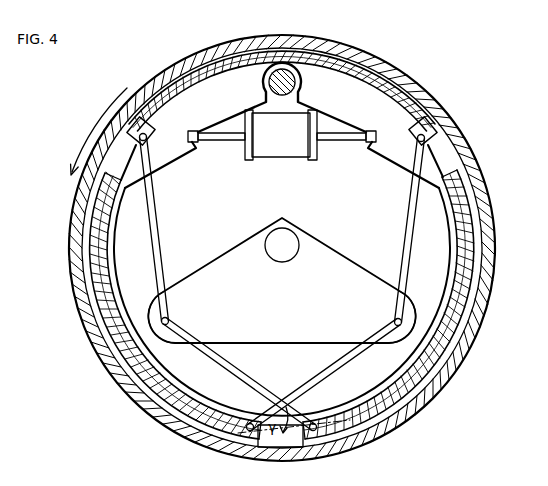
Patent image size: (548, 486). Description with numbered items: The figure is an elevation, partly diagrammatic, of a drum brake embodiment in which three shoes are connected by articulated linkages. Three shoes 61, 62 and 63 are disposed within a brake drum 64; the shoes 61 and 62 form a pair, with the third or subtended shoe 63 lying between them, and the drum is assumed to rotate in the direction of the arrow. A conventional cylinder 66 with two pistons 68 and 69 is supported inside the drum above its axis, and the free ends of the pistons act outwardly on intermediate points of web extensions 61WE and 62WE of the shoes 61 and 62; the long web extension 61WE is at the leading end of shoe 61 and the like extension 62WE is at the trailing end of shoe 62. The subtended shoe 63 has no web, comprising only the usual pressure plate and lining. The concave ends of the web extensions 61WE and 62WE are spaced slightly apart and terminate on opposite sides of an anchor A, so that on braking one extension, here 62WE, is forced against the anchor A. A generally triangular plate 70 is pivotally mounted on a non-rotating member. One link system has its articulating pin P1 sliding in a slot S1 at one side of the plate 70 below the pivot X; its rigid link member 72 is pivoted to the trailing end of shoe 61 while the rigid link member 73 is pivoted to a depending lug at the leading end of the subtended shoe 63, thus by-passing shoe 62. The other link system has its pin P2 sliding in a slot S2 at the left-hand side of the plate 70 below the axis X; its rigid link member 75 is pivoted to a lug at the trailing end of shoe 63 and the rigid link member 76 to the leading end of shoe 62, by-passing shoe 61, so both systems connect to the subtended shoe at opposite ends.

The brake drum 64 is at (77, 271).
The subtended shoe 63 is at (382, 72).
The shoe 61 is at (117, 341).
The shoe 62 is at (426, 378).
The web extension 61WE is at (170, 160).
The web extension 62WE is at (385, 153).
The anchor A is at (296, 86).
The piston 68 is at (219, 137).
The piston 69 is at (347, 138).
The cylinder 66 is at (278, 150).
The rigid link member 75 is at (161, 245).
The rigid link member 73 is at (405, 255).
The rigid link member 76 is at (245, 371).
The rigid link member 72 is at (337, 365).
The triangular plate 70 is at (301, 319).
The pivot X is at (268, 258).
The articulating pin P2 is at (170, 321).
The articulating pin P1 is at (404, 316).
The slot S2 is at (167, 338).
The slot S1 is at (398, 338).